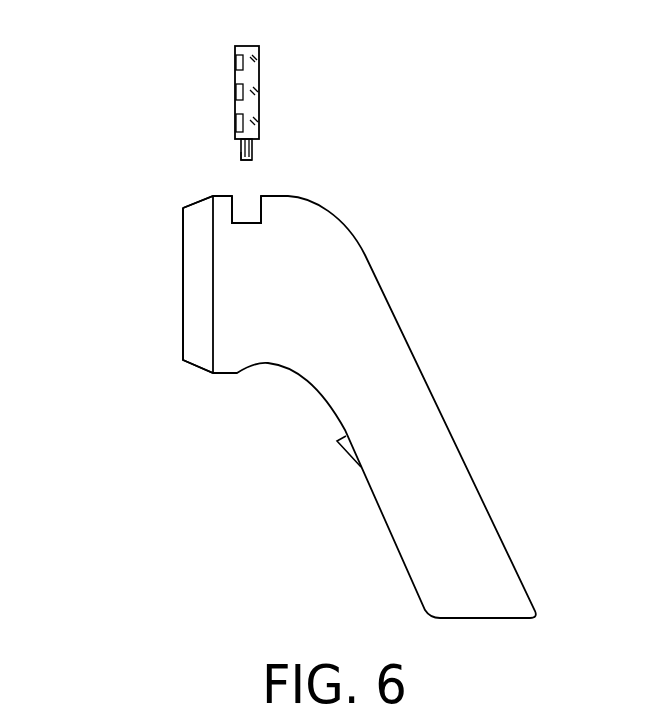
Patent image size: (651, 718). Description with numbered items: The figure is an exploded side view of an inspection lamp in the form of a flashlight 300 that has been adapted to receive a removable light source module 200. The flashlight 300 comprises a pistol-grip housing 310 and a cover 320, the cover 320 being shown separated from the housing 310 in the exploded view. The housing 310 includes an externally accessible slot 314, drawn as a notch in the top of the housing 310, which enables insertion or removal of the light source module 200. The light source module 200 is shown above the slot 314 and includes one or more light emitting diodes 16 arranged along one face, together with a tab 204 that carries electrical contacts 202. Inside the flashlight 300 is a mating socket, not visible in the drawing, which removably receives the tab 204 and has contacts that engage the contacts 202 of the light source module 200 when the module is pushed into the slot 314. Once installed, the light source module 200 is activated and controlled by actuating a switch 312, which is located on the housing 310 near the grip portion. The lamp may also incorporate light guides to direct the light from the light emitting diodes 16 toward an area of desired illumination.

The light emitting diodes 16 is at (237, 59).
The light source module 200 is at (253, 72).
The electrical contacts 202 is at (253, 152).
The tab 204 is at (241, 151).
The flashlight 300 is at (272, 410).
The pistol-grip housing 310 is at (403, 368).
The switch 312 is at (343, 447).
The slot 314 is at (240, 208).
The cover 320 is at (197, 357).